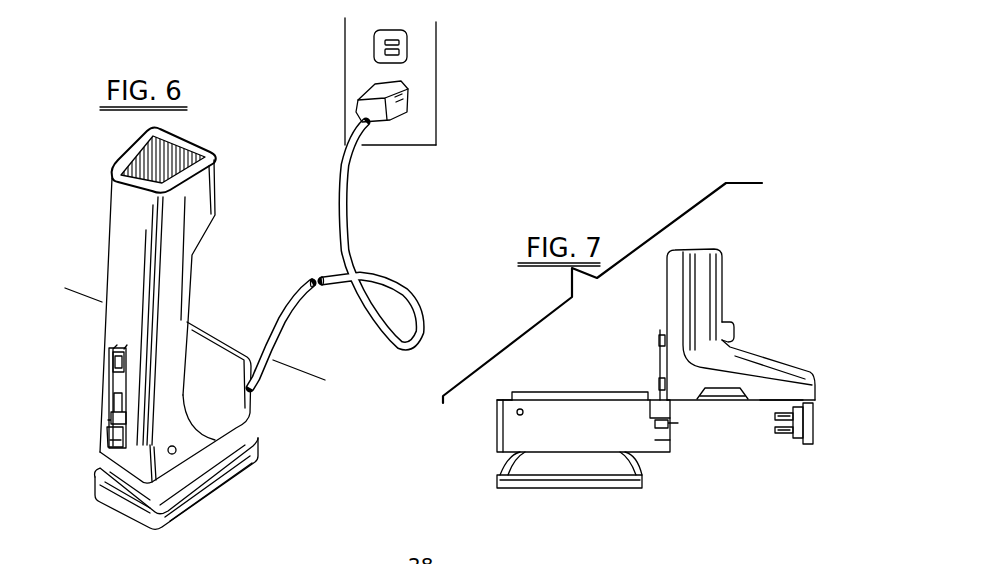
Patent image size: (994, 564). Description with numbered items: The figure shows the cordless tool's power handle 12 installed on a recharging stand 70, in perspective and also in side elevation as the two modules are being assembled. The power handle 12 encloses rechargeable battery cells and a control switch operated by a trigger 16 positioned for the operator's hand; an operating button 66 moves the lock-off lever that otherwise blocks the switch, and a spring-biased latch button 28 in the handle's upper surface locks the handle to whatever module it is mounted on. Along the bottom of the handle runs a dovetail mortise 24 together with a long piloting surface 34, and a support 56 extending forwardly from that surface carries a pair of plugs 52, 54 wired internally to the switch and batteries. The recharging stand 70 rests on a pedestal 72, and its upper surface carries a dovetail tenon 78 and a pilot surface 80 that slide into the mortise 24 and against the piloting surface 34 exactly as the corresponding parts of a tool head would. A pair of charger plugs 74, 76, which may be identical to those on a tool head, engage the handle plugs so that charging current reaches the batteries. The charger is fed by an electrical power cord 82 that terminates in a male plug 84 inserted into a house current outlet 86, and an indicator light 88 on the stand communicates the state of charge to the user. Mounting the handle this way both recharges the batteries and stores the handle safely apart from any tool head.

In FIG. 6, the power handle 12 is at (118, 258).
In FIG. 7, the power handle 12 is at (707, 277).
In FIG. 7, the trigger 16 is at (733, 328).
In FIG. 7, the dovetail mortise 24 is at (740, 386).
In FIG. 6, the latch button 28 is at (113, 415).
In FIG. 7, the latch button 28 is at (658, 383).
In FIG. 7, the piloting surface 34 is at (767, 403).
In FIG. 7, the plug 52 is at (785, 434).
In FIG. 7, the plug 54 is at (808, 413).
In FIG. 7, the support 56 is at (815, 430).
In FIG. 6, the operating button 66 is at (113, 362).
In FIG. 7, the operating button 66 is at (658, 343).
In FIG. 6, the recharging stand 70 is at (107, 432).
In FIG. 7, the recharging stand 70 is at (507, 433).
In FIG. 7, the pedestal 72 is at (600, 490).
In FIG. 7, the plug 74 is at (672, 430).
In FIG. 7, the plug 76 is at (678, 422).
In FIG. 7, the dovetail tenon 78 is at (592, 397).
In FIG. 7, the pilot surface 80 is at (503, 400).
In FIG. 6, the electrical power cord 82 is at (373, 335).
In FIG. 6, the male plug 84 is at (388, 118).
In FIG. 6, the house current outlet 86 is at (400, 90).
In FIG. 6, the indicator light 88 is at (176, 450).
In FIG. 7, the indicator light 88 is at (523, 415).